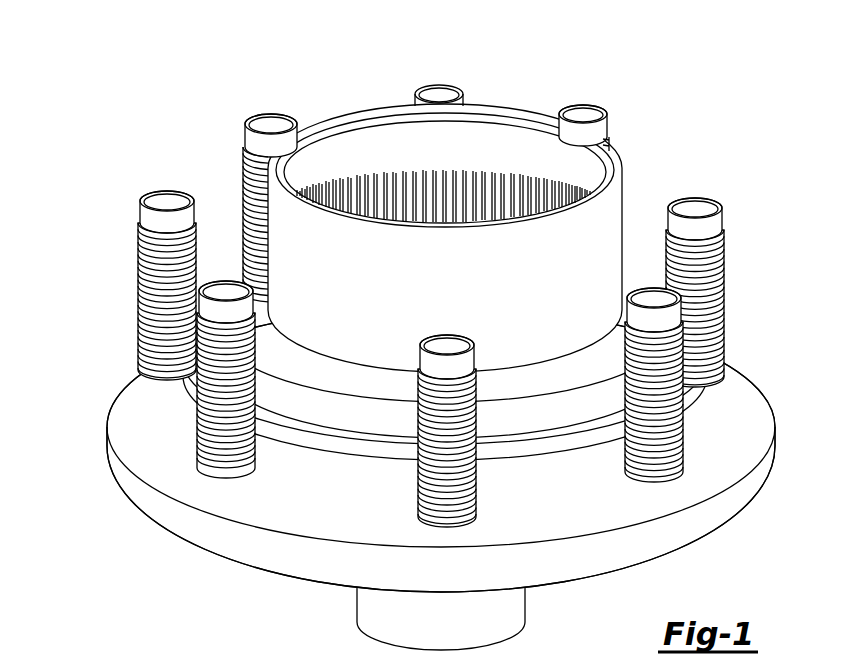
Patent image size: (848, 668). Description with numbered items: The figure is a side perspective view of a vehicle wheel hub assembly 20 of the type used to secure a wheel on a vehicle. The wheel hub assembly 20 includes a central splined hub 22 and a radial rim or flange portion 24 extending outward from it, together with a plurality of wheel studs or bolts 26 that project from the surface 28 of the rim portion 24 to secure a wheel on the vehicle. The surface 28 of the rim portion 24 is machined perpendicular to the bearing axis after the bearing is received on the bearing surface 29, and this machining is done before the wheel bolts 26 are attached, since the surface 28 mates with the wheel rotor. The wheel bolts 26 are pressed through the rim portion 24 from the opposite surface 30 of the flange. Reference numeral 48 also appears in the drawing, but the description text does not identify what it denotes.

The wheel hub assembly 20 is at (420, 340).
The central splined hub 22 is at (613, 208).
The rim portion 24 is at (144, 424).
The wheel studs 26 is at (240, 150).
The surface 28 is at (227, 503).
The bearing surface 29 is at (414, 628).
The surface 30 is at (266, 570).
The element 48 is at (126, 663).